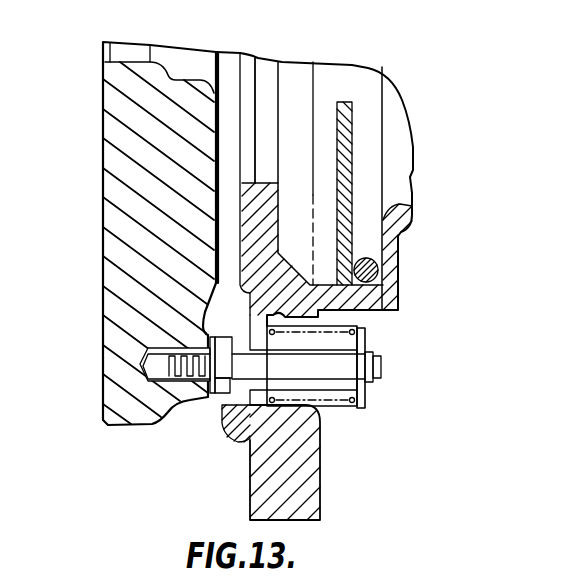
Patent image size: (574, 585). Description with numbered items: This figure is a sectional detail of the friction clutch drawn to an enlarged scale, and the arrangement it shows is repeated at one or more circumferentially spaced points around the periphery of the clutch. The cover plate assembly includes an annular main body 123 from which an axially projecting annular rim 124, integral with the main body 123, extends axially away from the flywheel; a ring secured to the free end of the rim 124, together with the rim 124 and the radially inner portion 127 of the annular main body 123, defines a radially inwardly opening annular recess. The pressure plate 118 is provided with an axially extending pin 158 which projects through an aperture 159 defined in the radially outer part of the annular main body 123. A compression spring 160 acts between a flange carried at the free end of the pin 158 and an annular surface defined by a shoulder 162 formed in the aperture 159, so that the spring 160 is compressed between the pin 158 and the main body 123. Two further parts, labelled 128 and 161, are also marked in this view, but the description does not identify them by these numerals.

The pressure plate 118 is at (152, 244).
The annular main body 123 is at (280, 487).
The axially projecting annular rim 124 is at (338, 296).
The radially inner portion of the annular main body 127 is at (260, 203).
The seal strip 128 is at (350, 162).
The axially extending pin 158 is at (332, 366).
The aperture 159 is at (279, 311).
The compression spring 160 is at (353, 335).
The flange plate 161 is at (362, 387).
The shoulder 162 is at (222, 427).